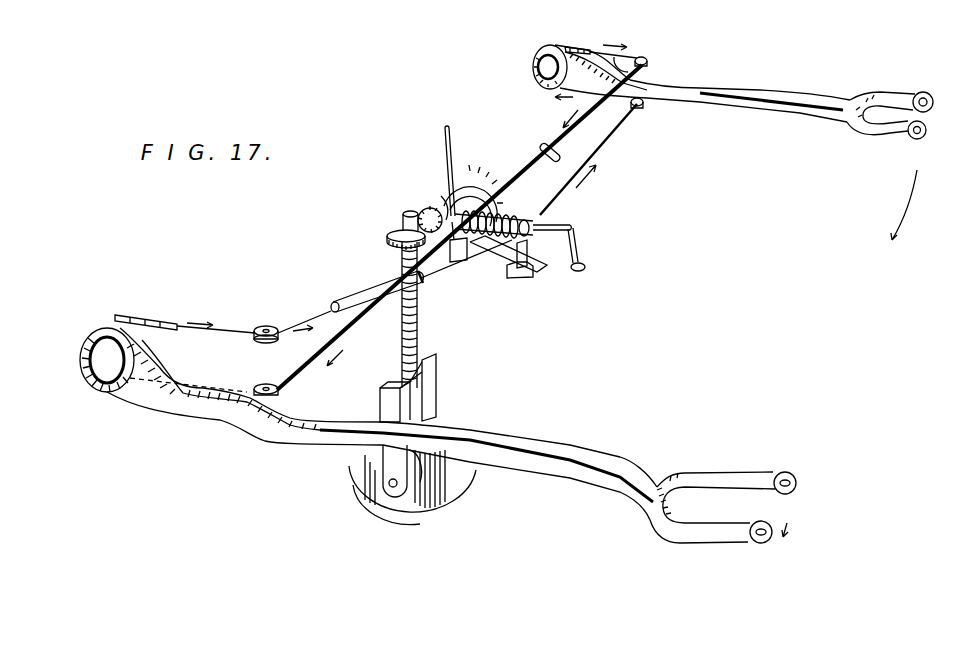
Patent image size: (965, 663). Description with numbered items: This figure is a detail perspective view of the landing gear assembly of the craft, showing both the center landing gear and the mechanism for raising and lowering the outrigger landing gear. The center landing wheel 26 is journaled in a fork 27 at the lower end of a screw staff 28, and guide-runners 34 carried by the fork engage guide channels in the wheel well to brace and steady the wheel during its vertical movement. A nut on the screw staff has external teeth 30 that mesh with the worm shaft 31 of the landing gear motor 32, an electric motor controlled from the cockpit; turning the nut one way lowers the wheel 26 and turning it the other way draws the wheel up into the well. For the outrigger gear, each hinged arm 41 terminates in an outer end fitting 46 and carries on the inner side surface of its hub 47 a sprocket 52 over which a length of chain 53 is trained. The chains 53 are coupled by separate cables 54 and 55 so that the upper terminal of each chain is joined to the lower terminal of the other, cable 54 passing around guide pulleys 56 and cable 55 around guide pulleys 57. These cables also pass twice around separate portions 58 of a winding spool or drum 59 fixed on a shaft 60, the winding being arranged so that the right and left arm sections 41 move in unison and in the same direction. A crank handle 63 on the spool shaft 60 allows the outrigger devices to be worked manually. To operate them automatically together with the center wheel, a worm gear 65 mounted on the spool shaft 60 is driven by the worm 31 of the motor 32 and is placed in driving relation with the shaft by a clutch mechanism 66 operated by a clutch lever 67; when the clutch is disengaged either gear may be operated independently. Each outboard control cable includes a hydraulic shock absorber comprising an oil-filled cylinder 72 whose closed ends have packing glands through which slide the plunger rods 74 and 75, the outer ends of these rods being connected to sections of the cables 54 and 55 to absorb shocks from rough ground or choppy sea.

The center landing wheel 26 is at (460, 493).
The fork 27 is at (438, 397).
The screw staff 28 is at (418, 322).
The external teeth 30 is at (399, 223).
The worm shaft 31 is at (401, 253).
The landing gear motor 32 is at (459, 172).
The guide-runners 34 is at (389, 405).
The arm 41 is at (778, 107).
The fork 46 is at (860, 132).
The hub 47 is at (550, 46).
The sprocket 52 is at (535, 75).
The chain 53 is at (578, 48).
The cable 54 is at (646, 67).
The cable 55 is at (623, 128).
The guide pulleys 56 is at (645, 57).
The guide pulleys 57 is at (642, 108).
The portions of winding spool 58 is at (509, 212).
The winding spool or drum 59 is at (481, 255).
The shaft 60 is at (552, 225).
The crank handle 63 is at (574, 250).
The worm gear 65 is at (420, 210).
The clutch mechanism 66 is at (442, 196).
The clutch lever 67 is at (446, 133).
The cylinder 72 is at (563, 138).
The plunger rod 74 is at (546, 151).
The plunger rod 75 is at (630, 106).